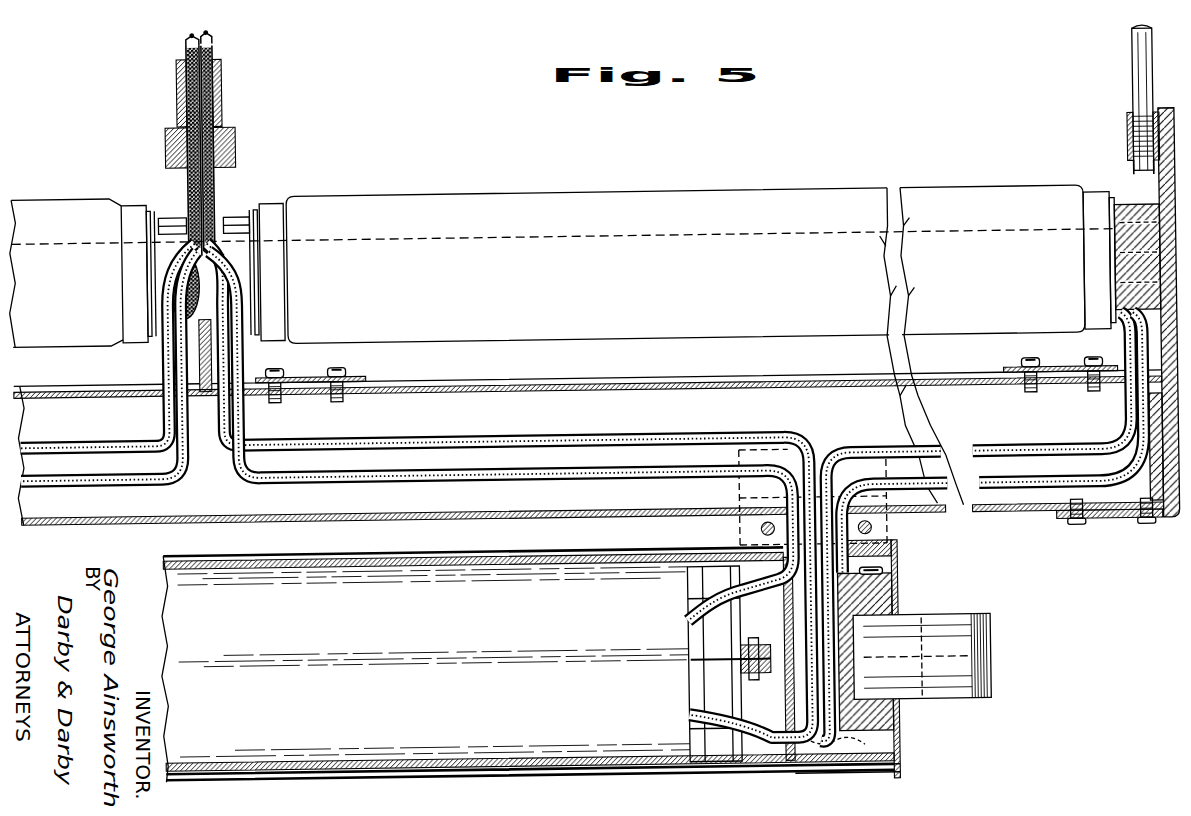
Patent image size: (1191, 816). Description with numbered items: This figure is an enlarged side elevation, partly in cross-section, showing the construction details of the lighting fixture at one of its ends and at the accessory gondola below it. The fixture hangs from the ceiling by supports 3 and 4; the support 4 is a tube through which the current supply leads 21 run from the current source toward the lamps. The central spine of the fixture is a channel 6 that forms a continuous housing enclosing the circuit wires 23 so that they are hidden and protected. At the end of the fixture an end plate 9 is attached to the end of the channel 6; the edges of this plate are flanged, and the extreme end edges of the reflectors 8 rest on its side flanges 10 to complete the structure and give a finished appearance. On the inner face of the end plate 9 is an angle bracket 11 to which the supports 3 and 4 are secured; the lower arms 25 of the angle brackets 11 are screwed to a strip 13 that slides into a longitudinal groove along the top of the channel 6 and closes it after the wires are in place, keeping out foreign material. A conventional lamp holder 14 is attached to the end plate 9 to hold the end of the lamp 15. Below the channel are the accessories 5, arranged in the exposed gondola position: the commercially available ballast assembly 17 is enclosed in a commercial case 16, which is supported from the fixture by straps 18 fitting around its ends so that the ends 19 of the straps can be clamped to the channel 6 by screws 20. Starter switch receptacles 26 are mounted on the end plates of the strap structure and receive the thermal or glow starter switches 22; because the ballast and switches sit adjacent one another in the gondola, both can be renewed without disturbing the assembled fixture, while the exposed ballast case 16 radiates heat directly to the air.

The rod support 3 is at (1137, 63).
The tubular support 4 is at (224, 97).
The accessories 5 is at (400, 805).
The channel 6 is at (152, 517).
The reflector 8 is at (780, 230).
The end plate 9 is at (1161, 116).
The side flange 10 is at (1112, 527).
The angle bracket 11 is at (200, 195).
The strip 13 is at (497, 392).
The lamp holder 14 is at (165, 211).
The lamp 15 is at (65, 193).
The ballast case 16 is at (258, 777).
The ballast assembly 17 is at (527, 680).
The strap 18 is at (896, 538).
The strap end 19 is at (738, 492).
The screw 20 is at (758, 531).
The current supply lead 21 is at (214, 36).
The starter switch 22 is at (990, 661).
The circuit wire 23 is at (232, 440).
The lower arm of angle bracket 25 is at (298, 373).
The starter switch receptacle 26 is at (880, 577).